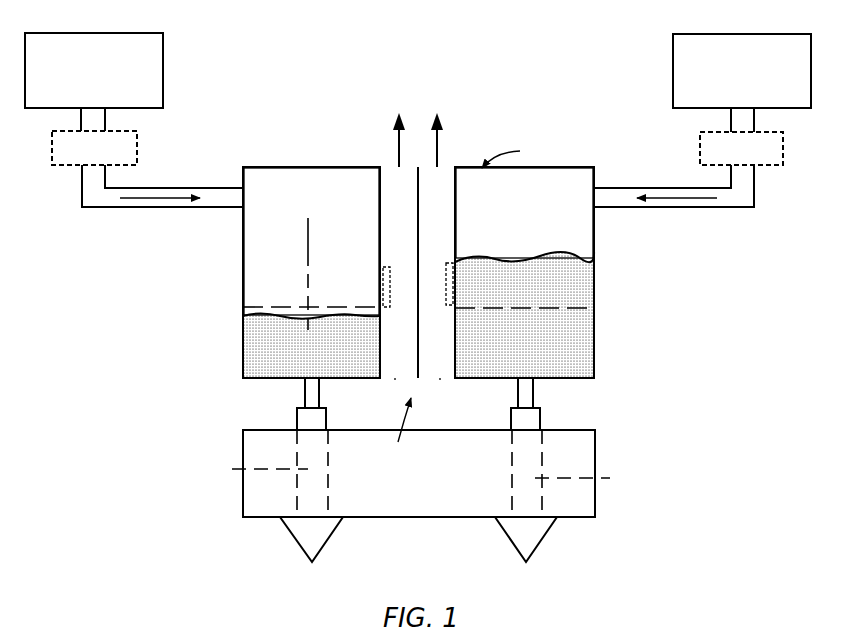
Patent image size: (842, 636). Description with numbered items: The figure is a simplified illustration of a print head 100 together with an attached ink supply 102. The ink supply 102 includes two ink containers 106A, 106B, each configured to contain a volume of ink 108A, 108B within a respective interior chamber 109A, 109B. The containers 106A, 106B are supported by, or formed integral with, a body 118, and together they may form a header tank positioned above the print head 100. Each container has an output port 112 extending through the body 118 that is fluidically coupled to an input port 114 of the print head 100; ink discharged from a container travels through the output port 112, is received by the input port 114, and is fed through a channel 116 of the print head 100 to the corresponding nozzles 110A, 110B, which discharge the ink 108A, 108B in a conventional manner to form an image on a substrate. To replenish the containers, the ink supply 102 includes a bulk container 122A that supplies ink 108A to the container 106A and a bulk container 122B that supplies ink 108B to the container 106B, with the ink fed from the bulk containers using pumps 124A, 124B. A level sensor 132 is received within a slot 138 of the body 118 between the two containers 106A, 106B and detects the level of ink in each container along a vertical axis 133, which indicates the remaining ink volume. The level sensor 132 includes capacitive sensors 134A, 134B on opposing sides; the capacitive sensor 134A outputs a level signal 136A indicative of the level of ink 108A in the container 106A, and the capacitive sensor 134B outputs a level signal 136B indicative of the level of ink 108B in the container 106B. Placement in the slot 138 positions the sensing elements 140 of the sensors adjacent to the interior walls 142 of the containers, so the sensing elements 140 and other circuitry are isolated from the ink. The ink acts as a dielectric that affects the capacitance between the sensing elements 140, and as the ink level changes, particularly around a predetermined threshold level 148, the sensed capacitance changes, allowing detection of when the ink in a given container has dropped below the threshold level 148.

The print head 100 is at (630, 460).
The ink supply 102 is at (148, 406).
The ink container 106A is at (565, 176).
The ink container 106B is at (265, 182).
The volume of ink 108A is at (697, 198).
The volume of ink 108B is at (139, 198).
The interior chamber 109A is at (570, 225).
The interior chamber 109B is at (296, 180).
The nozzle 110A is at (535, 540).
The nozzle 110B is at (305, 540).
The output port 112 is at (305, 396).
The input port 114 is at (300, 420).
The channel 116 is at (232, 469).
The body 118 is at (243, 228).
The bulk container 122A is at (672, 58).
The bulk container 122B is at (164, 58).
The pump 124A is at (765, 165).
The pump 124B is at (66, 165).
The level sensor 132 is at (518, 155).
The vertical axis 133 is at (308, 250).
The capacitive sensor 134A is at (440, 379).
The capacitive sensor 134B is at (395, 379).
The level signal 136A is at (437, 147).
The level signal 136B is at (398, 147).
The slot 138 is at (388, 430).
The sensing elements 140 is at (380, 293).
The interior walls 142 is at (380, 240).
The threshold level 148 is at (275, 307).